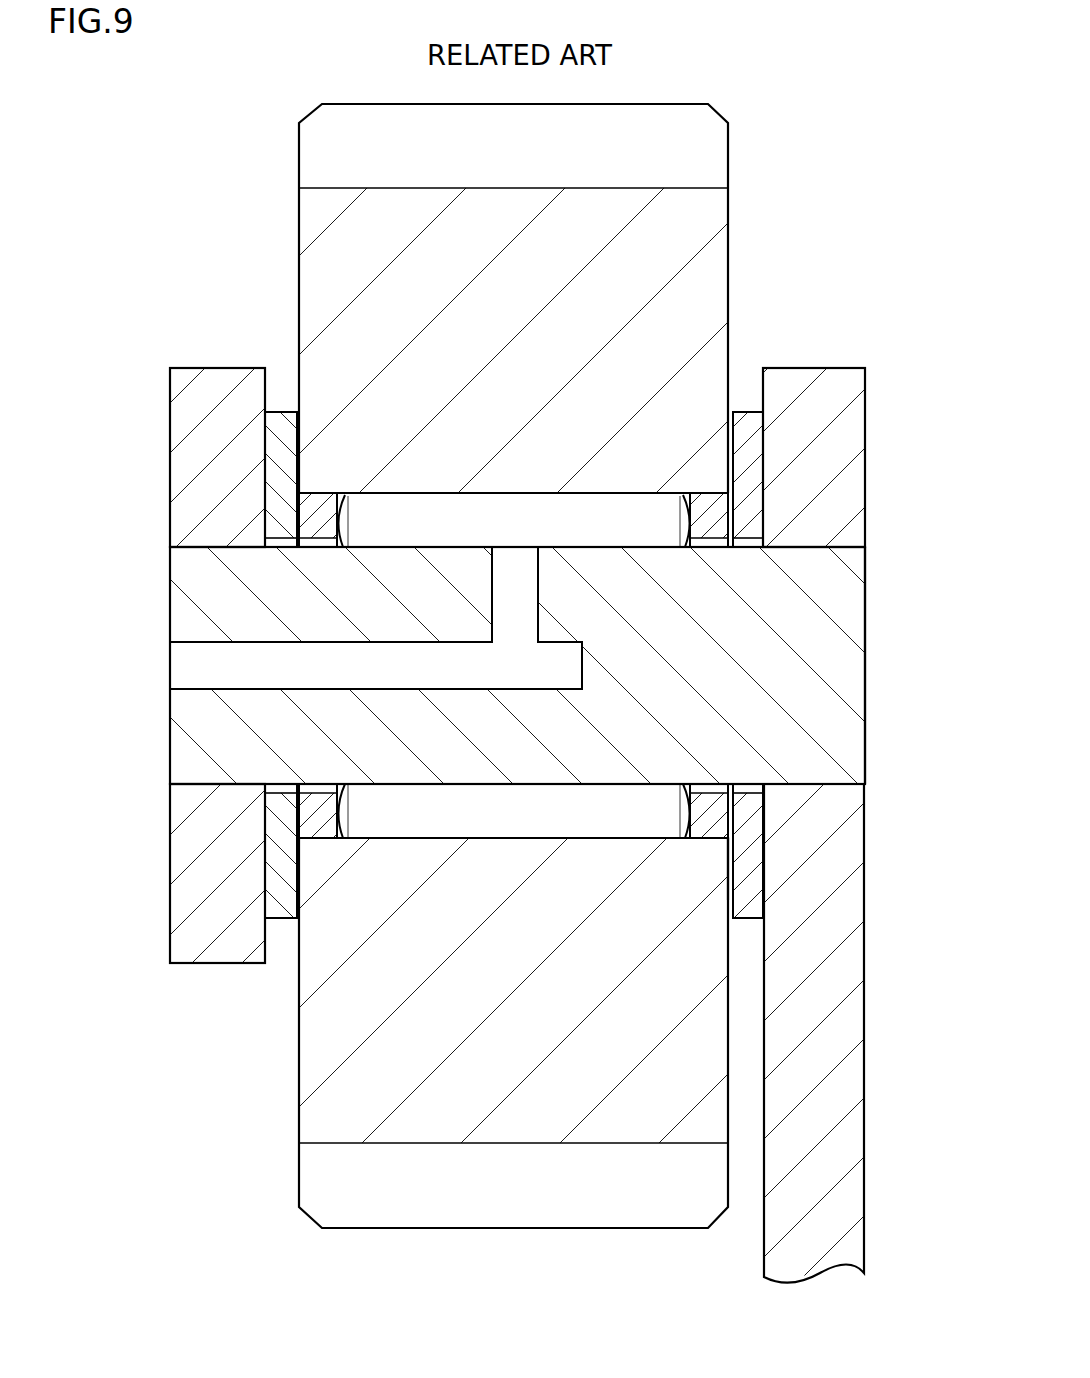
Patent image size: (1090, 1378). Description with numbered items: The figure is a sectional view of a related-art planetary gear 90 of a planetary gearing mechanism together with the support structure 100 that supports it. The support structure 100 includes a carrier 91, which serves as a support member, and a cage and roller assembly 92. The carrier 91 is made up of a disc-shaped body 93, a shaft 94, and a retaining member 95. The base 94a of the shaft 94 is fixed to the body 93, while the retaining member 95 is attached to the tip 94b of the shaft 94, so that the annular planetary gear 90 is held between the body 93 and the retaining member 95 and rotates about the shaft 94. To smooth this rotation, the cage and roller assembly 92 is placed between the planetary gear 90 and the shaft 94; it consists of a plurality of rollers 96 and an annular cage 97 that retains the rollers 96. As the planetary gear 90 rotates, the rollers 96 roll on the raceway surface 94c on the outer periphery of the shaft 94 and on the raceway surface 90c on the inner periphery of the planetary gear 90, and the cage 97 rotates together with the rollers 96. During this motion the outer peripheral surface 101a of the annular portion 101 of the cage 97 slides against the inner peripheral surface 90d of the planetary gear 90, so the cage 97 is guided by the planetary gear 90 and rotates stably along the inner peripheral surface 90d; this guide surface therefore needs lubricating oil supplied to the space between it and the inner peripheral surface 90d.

The planetary gear 90 is at (299, 240).
The raceway surface 90c is at (515, 833).
The inner peripheral surface 90d is at (692, 836).
The carrier 91 is at (874, 1206).
The cage and roller assembly 92 is at (424, 478).
The body 93 is at (843, 377).
The shaft 94 is at (168, 740).
The base 94a is at (842, 547).
The tip 94b is at (193, 587).
The raceway surface 94c is at (405, 786).
The retaining member 95 is at (185, 417).
The rollers 96 is at (452, 838).
The cage 97 is at (315, 828).
The support structure 100 is at (161, 790).
The annular portion 101 is at (717, 812).
The outer peripheral surface 101a is at (712, 838).